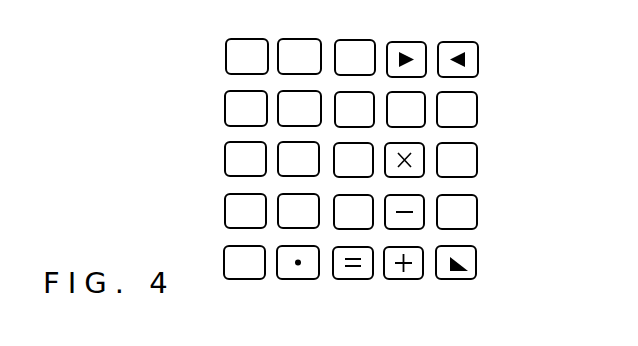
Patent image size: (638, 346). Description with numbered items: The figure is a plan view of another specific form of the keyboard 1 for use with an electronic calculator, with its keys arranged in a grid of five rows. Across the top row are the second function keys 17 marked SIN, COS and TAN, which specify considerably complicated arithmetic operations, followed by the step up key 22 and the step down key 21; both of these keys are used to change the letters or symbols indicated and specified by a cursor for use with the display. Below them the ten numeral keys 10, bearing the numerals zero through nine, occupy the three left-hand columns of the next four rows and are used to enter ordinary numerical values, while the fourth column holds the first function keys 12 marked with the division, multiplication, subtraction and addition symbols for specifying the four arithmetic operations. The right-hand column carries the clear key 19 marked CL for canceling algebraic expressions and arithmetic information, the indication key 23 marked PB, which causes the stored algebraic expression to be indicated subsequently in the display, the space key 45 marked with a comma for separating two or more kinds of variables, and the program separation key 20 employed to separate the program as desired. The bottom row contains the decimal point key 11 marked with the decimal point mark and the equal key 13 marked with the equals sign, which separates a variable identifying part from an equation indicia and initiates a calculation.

The keyboard 1 is at (505, 133).
The numeral keys 10 is at (230, 107).
The decimal point key 11 is at (295, 280).
The first function keys 12 is at (416, 280).
The equal key 13 is at (361, 280).
The second function keys 17 is at (228, 54).
The clear key 19 is at (474, 109).
The program separation key 20 is at (474, 268).
The step down key 21 is at (474, 52).
The step up key 22 is at (412, 44).
The indication key 23 is at (474, 165).
The space key 45 is at (474, 224).